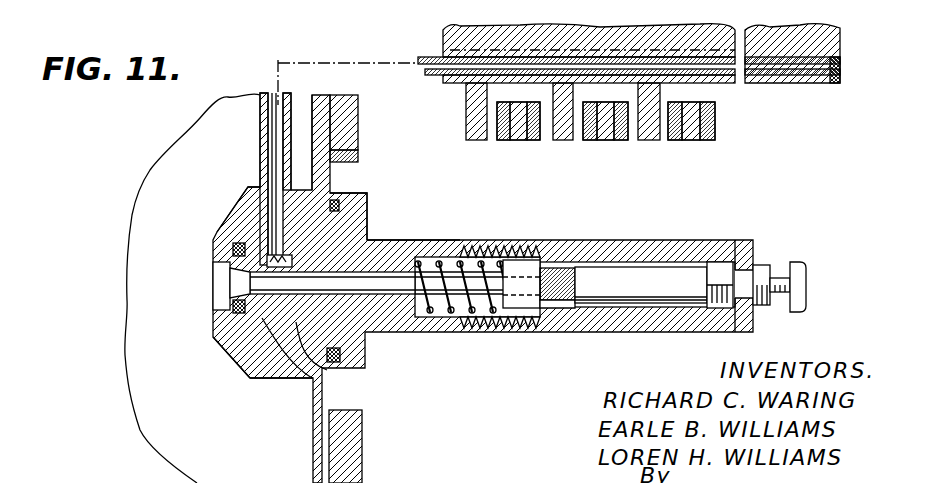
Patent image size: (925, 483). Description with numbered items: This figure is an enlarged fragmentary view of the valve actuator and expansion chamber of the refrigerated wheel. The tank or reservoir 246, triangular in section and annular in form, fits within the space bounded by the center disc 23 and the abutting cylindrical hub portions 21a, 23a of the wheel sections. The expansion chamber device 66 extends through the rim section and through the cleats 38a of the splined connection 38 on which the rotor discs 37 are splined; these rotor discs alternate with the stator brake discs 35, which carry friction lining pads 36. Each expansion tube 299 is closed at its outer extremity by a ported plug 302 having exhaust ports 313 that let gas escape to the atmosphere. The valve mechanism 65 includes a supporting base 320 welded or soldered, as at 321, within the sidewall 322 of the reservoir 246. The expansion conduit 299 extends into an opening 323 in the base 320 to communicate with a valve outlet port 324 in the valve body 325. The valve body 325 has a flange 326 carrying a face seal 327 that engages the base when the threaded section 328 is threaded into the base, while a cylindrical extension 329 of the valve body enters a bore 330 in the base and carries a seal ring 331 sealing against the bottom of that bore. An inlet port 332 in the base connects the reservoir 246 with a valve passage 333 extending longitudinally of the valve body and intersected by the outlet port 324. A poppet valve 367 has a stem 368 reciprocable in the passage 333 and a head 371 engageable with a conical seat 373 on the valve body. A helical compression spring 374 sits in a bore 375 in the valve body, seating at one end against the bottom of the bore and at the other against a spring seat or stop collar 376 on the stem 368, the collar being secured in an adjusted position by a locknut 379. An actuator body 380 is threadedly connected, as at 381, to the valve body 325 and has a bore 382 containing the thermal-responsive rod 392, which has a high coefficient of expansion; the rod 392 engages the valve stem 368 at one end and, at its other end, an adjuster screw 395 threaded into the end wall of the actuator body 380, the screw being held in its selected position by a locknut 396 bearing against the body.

The cylindrical hub portion 21a is at (327, 0).
The cylindrical hub portion 23a is at (434, 0).
The expansion chamber device 66 is at (590, 42).
The expansion tube 299 is at (690, 52).
The ported plug 302 is at (842, 55).
The exhaust ports 313 is at (842, 70).
The splined connection 38 is at (470, 86).
The cleats 38a is at (722, 85).
The rotor discs 37 is at (476, 118).
The friction lining pads 36 is at (512, 140).
The stator brake discs 35 is at (600, 140).
The sidewall 322 is at (335, 118).
The center disc 23 is at (352, 132).
The welded or soldered joint 321 is at (332, 170).
The flange 326 is at (368, 205).
The valve mechanism 65 is at (452, 233).
The valve body 325 is at (370, 237).
The threaded connection 381 is at (485, 250).
The bore 375 is at (555, 268).
The locknut 379 is at (588, 248).
The bore 382 is at (615, 252).
The actuator body 380 is at (706, 243).
The locknut 396 is at (762, 268).
The adjuster screw 395 is at (800, 265).
The opening 323 is at (263, 203).
The seal ring 331 is at (232, 245).
The conical seat 373 is at (232, 278).
The inlet port 332 is at (215, 289).
The head 371 is at (232, 305).
The cylindrical extension 329 is at (235, 359).
The bore 330 is at (262, 372).
The supporting base 320 is at (268, 379).
The threaded section 328 is at (320, 380).
The reservoir 246 is at (340, 447).
The face seal 327 is at (343, 354).
The valve passage 333 is at (373, 296).
The poppet valve 367 is at (400, 296).
The helical compression spring 374 is at (470, 328).
The stem 368 is at (505, 312).
The stop collar 376 is at (560, 308).
The valve outlet port 324 is at (290, 260).
The thermal-responsive rod 392 is at (654, 285).